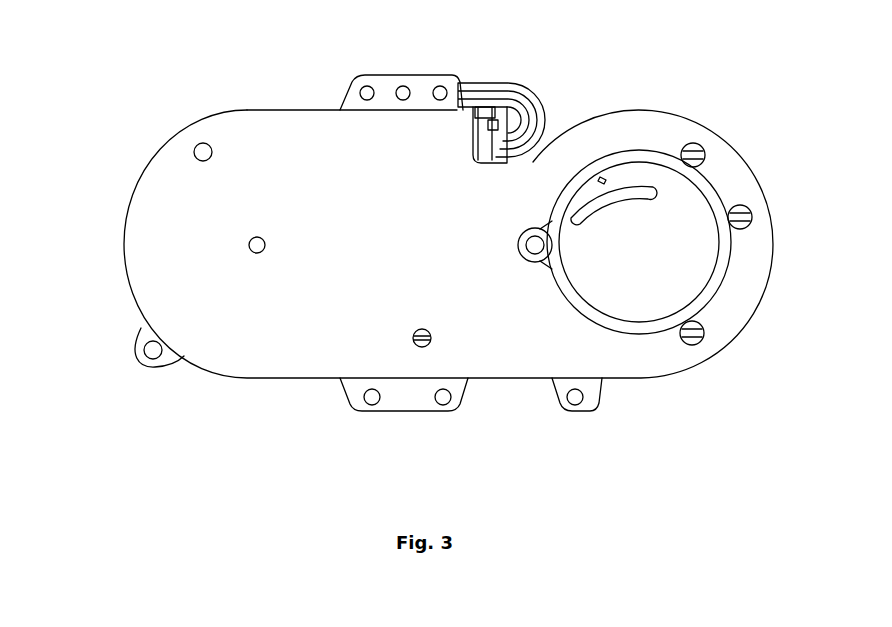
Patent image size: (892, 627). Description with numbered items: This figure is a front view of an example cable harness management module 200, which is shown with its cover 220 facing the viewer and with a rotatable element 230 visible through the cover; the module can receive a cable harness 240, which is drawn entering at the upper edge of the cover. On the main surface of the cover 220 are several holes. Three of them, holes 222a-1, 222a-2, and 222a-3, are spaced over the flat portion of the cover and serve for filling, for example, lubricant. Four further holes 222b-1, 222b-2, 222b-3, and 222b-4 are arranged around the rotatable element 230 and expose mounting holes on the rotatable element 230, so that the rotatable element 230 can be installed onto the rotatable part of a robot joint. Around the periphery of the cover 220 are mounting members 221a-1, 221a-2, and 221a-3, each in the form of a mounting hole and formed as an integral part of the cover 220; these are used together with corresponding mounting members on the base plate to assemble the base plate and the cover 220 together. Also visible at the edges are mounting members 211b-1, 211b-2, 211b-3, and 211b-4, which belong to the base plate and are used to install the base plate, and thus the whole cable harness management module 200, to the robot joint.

The cable harness management module 200 is at (146, 427).
The cover 220 is at (142, 228).
The rotatable element 230 is at (748, 280).
The cable harness 240 is at (538, 86).
The mounting member 221a-1 is at (366, 94).
The mounting member 221a-2 is at (577, 399).
The mounting member 221a-3 is at (152, 351).
The mounting member 211b-1 is at (402, 92).
The mounting member 211b-2 is at (441, 92).
The mounting member 211b-3 is at (445, 398).
The mounting member 211b-4 is at (370, 398).
The hole 222a-1 is at (196, 153).
The hole 222a-2 is at (262, 247).
The hole 222a-3 is at (425, 340).
The hole 222b-1 is at (698, 156).
The hole 222b-2 is at (745, 218).
The hole 222b-3 is at (696, 342).
The hole 222b-4 is at (518, 250).